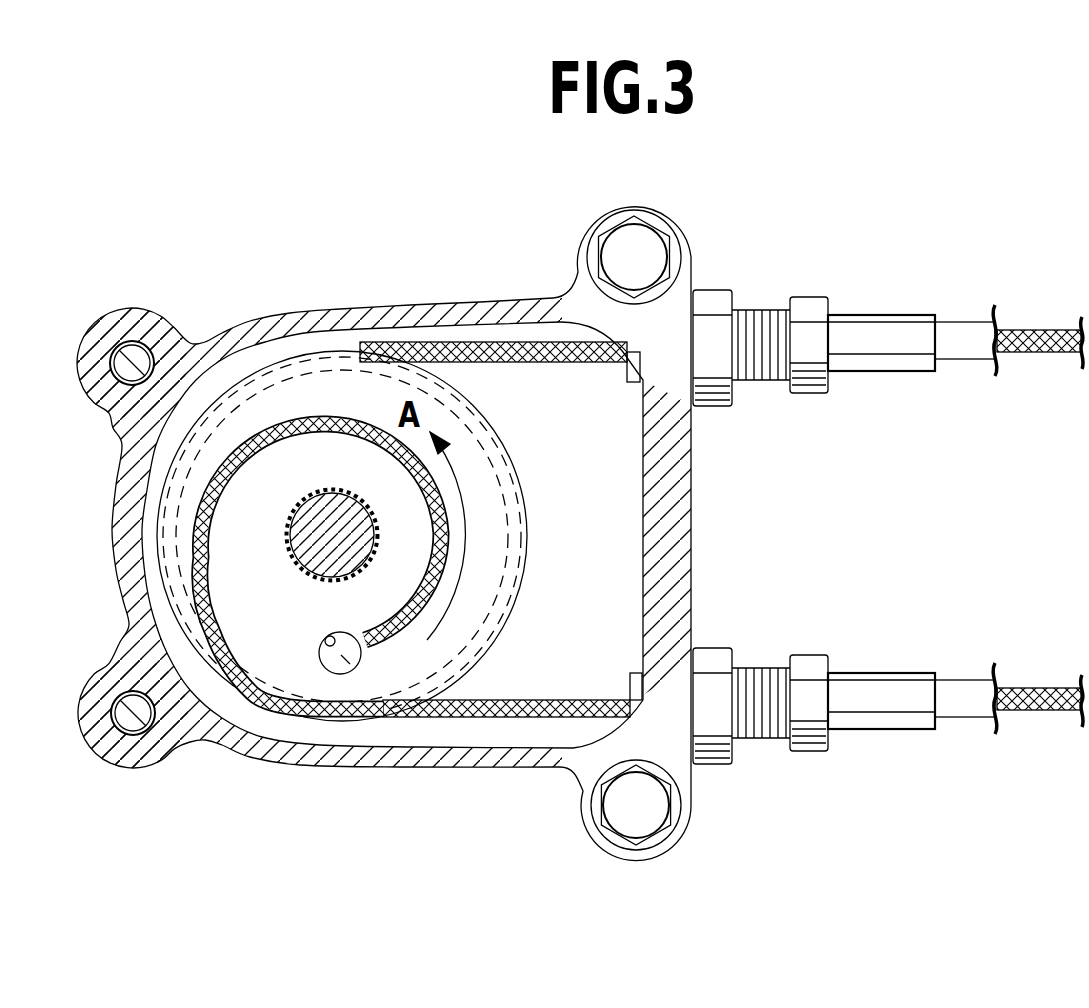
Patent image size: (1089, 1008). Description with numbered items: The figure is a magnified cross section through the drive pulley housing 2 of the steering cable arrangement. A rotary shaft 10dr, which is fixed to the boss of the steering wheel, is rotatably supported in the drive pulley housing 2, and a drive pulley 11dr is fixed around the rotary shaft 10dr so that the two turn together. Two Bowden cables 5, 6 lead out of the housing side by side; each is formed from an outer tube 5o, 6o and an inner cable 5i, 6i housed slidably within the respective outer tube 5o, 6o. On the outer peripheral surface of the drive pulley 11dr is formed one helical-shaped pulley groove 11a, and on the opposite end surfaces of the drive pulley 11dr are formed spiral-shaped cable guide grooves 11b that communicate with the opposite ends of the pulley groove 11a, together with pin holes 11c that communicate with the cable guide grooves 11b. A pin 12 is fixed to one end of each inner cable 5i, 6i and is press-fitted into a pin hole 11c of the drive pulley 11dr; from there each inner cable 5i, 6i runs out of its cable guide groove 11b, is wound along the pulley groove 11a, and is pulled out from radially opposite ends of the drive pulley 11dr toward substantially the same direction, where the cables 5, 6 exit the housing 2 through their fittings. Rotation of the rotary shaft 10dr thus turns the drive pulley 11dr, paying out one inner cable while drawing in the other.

The drive pulley housing 2 is at (312, 785).
The Bowden cable 5 is at (888, 772).
The outer tube 5o is at (957, 700).
The inner cable 5i is at (1043, 712).
The Bowden cable 6 is at (888, 269).
The outer tube 6o is at (977, 327).
The inner cable 6i is at (1055, 330).
The rotary shaft 10dr is at (292, 552).
The drive pulley 11dr is at (342, 380).
The pulley groove 11a is at (514, 512).
The cable guide groove 11b is at (382, 442).
The pin hole 11c is at (325, 640).
The pin 12 is at (348, 665).